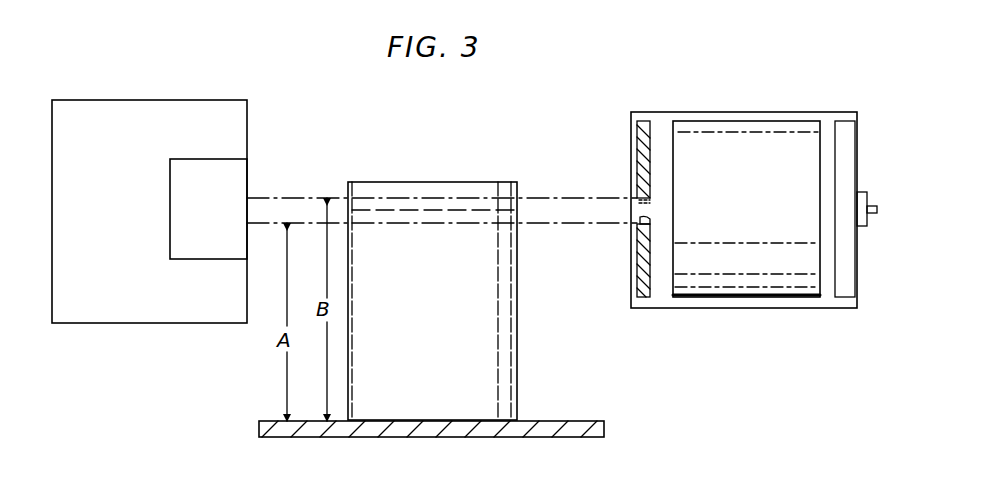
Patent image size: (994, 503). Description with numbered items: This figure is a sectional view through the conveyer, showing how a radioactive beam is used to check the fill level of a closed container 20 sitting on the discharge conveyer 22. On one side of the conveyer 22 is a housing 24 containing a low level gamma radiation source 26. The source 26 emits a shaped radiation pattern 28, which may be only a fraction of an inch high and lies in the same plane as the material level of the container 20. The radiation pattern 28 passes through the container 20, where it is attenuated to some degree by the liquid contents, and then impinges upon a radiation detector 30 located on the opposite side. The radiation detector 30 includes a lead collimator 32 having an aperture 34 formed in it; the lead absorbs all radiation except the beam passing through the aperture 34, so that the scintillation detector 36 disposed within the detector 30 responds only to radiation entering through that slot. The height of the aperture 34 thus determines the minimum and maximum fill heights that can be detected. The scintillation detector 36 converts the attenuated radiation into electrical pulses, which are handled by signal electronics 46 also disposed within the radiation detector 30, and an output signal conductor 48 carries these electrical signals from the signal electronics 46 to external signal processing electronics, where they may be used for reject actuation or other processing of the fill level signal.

The container / sample cell 20 is at (508, 386).
The discharge conveyer 22 is at (288, 429).
The housing 24 is at (136, 110).
The radiation source 26 is at (175, 211).
The radiation pattern 28 is at (566, 212).
The radiation detector 30 is at (708, 112).
The lead collimator 32 is at (640, 285).
The aperture 34 is at (645, 219).
The scintillation detector 36 is at (716, 290).
The signal electronics 46 is at (848, 290).
The output signal conductor 48 is at (870, 192).